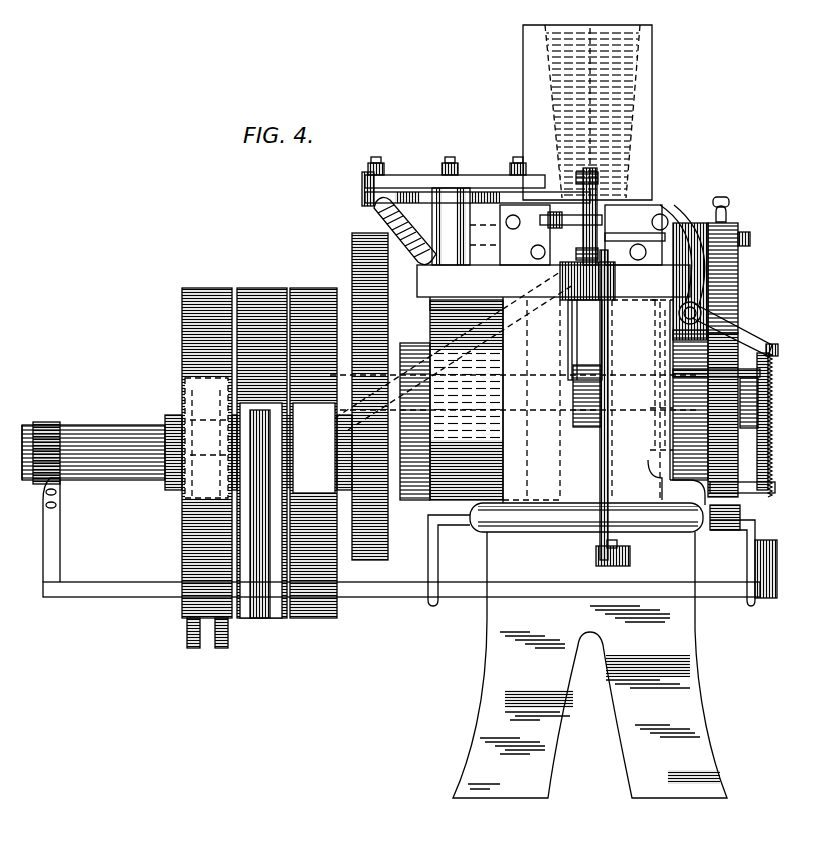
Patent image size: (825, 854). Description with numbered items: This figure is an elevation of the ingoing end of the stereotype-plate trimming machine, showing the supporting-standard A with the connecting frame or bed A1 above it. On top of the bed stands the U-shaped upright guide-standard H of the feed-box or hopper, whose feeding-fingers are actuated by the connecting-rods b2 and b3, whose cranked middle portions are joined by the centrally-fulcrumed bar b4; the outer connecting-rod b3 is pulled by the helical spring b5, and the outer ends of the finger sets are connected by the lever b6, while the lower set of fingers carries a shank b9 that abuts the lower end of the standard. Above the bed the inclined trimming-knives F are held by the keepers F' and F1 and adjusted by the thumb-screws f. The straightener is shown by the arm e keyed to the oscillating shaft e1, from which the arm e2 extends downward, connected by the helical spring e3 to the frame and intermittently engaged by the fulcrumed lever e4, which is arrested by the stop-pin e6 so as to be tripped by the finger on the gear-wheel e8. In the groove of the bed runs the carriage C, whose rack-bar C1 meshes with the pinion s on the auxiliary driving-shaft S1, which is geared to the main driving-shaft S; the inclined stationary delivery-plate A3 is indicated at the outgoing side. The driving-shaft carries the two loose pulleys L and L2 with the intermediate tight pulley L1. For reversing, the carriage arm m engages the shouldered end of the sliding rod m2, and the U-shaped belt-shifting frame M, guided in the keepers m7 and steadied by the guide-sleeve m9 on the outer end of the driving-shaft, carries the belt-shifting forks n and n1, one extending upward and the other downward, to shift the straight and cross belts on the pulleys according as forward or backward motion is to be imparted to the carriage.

The upright guide-standard H is at (662, 126).
The centrally-fulcrumed bar b4 is at (400, 180).
The connecting-rod b2 is at (510, 192).
The outer connecting-rod b3 is at (362, 200).
The helical spring b5 is at (375, 218).
The keeper F' is at (454, 226).
The lever b6 is at (598, 186).
The shank b9 is at (602, 212).
The keeper F1 is at (690, 232).
The thumb-screw f is at (728, 212).
The trimming-knife F is at (751, 238).
The arm e is at (720, 272).
The oscillating shaft e1 is at (702, 312).
The arm e2 is at (752, 334).
The fulcrumed lever e4 is at (778, 352).
The stop-pin e6 is at (762, 377).
The gear-wheel e8 is at (735, 436).
The helical spring e3 is at (770, 447).
The connecting frame or bed A1 is at (553, 384).
The carriage C is at (616, 296).
The rack-bar C1 is at (586, 340).
The pinion s is at (573, 390).
The arm m is at (608, 386).
The sliding rod m2 is at (620, 562).
The auxiliary driving-shaft S1 is at (586, 479).
The supporting-standard A is at (695, 668).
The driving-shaft S is at (345, 500).
The stationary delivery-plate A3 is at (345, 400).
The loose pulley L2 is at (222, 622).
The belt-shifting fork n1 is at (192, 630).
The tight pulley L1 is at (268, 620).
The belt-shifting fork n is at (280, 450).
The loose pulley L is at (318, 620).
The guide-sleeve m9 is at (46, 426).
The belt-shifting frame M is at (388, 596).
The keeper m7 is at (438, 562).